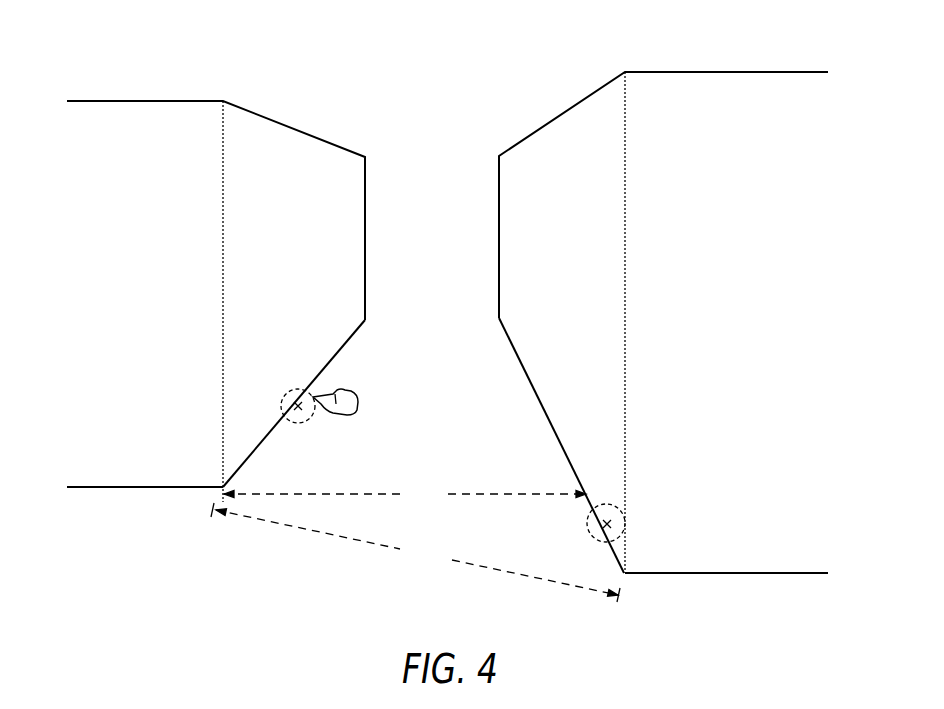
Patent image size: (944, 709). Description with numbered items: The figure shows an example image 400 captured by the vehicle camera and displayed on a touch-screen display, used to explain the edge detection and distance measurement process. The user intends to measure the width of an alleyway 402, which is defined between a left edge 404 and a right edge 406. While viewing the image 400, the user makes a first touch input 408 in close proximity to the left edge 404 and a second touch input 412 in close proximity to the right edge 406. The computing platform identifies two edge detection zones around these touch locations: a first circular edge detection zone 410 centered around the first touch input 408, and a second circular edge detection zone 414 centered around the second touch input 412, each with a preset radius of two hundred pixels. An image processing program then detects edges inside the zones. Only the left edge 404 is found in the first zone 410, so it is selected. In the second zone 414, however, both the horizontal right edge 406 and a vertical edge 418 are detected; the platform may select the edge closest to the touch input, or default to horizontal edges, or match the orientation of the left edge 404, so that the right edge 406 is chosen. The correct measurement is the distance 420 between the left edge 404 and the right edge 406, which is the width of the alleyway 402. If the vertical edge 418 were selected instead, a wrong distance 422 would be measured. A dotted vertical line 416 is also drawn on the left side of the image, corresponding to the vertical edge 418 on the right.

The image 400 is at (196, 591).
The alleyway 402 is at (453, 379).
The left edge 404 is at (342, 345).
The right edge 406 is at (525, 368).
The first touch input 408 is at (297, 416).
The first circular edge detection zone 410 is at (297, 392).
The second touch input 412 is at (607, 522).
The second circular edge detection zone 414 is at (625, 529).
The left reference axis 416 is at (223, 372).
The vertical edge 418 is at (625, 371).
The distance 420 is at (405, 496).
The wrong distance 422 is at (415, 552).